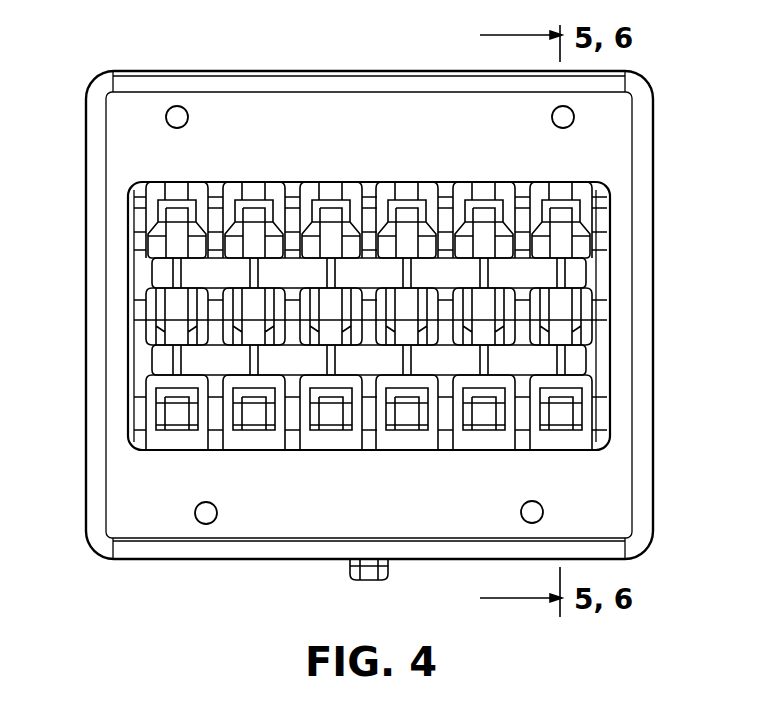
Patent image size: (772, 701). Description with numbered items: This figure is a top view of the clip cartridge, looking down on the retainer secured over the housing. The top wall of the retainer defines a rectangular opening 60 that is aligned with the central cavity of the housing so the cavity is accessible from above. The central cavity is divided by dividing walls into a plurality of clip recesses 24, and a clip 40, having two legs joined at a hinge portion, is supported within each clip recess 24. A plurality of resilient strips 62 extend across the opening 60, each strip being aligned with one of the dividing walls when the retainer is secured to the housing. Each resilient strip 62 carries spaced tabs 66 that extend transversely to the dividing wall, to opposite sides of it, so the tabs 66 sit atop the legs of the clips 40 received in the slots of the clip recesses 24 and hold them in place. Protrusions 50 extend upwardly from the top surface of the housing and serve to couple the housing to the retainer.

The clip recesses 24 is at (275, 442).
The clip 40 is at (561, 208).
The protrusions 50 is at (176, 116).
The rectangular opening 60 is at (592, 250).
The resilient strips 62 is at (205, 243).
The spaced tabs 66 is at (160, 352).